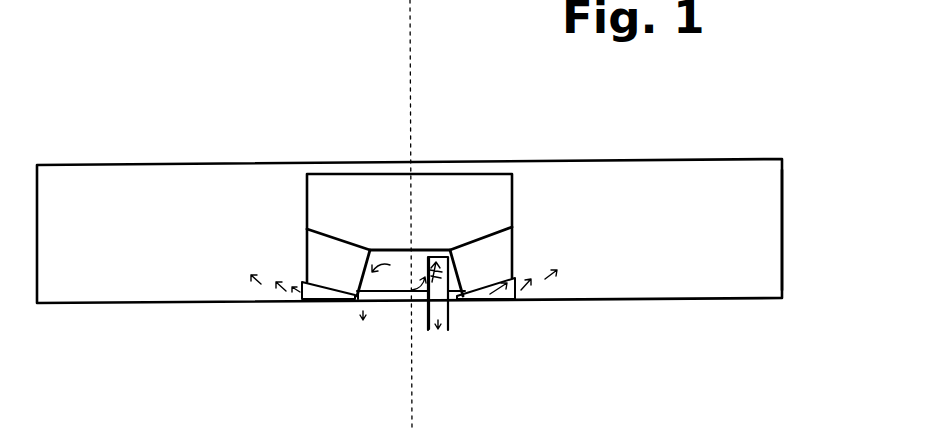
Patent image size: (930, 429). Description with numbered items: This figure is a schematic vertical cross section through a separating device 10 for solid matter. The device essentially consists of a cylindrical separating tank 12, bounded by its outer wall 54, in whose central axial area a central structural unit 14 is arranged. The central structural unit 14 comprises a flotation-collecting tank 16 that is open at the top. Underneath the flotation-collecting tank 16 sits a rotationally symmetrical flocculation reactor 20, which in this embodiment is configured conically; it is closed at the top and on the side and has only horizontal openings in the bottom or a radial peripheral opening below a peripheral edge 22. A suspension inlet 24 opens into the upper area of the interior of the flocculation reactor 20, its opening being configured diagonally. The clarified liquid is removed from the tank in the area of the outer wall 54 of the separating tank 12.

The separating device 10 is at (703, 112).
The separating tank 12 is at (716, 203).
The central structural unit 14 is at (283, 185).
The flotation-collecting tank 16 is at (366, 214).
The flocculation reactor 20 is at (398, 260).
The peripheral edge 22 is at (388, 290).
The suspension inlet 24 is at (446, 315).
The outer wall 54 is at (782, 243).